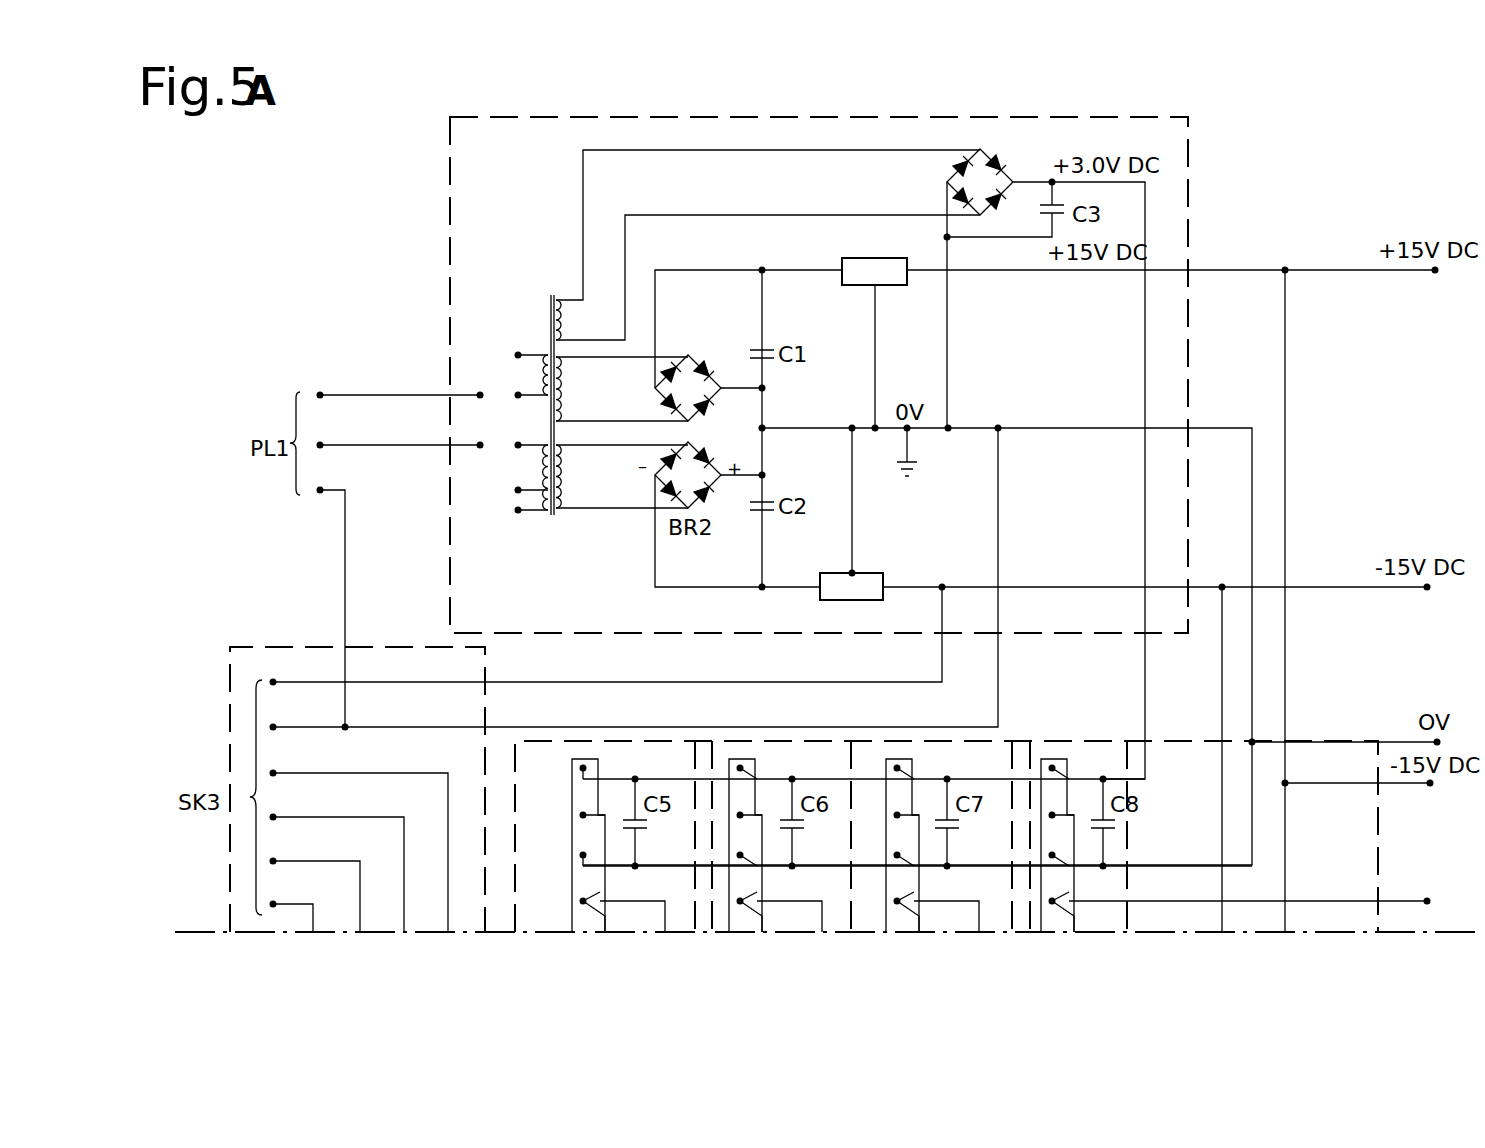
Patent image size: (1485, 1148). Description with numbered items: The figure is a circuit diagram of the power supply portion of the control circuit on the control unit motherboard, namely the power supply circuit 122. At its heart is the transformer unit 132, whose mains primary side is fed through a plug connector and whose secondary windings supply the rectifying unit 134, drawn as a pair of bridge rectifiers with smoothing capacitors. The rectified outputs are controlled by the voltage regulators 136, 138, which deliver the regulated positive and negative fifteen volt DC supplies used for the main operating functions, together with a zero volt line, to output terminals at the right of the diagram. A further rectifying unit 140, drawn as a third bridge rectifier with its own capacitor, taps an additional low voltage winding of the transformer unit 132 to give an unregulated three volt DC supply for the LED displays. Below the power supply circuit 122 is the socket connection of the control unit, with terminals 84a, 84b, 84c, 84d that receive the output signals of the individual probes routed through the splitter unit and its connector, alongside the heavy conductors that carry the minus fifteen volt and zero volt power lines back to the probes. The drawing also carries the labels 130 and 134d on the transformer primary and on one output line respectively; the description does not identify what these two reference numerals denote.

The power supply circuit 122 is at (450, 262).
The transformer primary windings 130 is at (528, 433).
The transformer unit 132 is at (537, 408).
The rectifying unit 134 is at (683, 314).
The voltage regulator 136 is at (848, 283).
The voltage regulator 138 is at (818, 594).
The further rectifying unit 140 is at (990, 148).
The terminal 84a is at (380, 773).
The terminal 84b is at (360, 817).
The terminal 84c is at (315, 861).
The terminal 84d is at (290, 904).
The output terminal 134d is at (1388, 901).